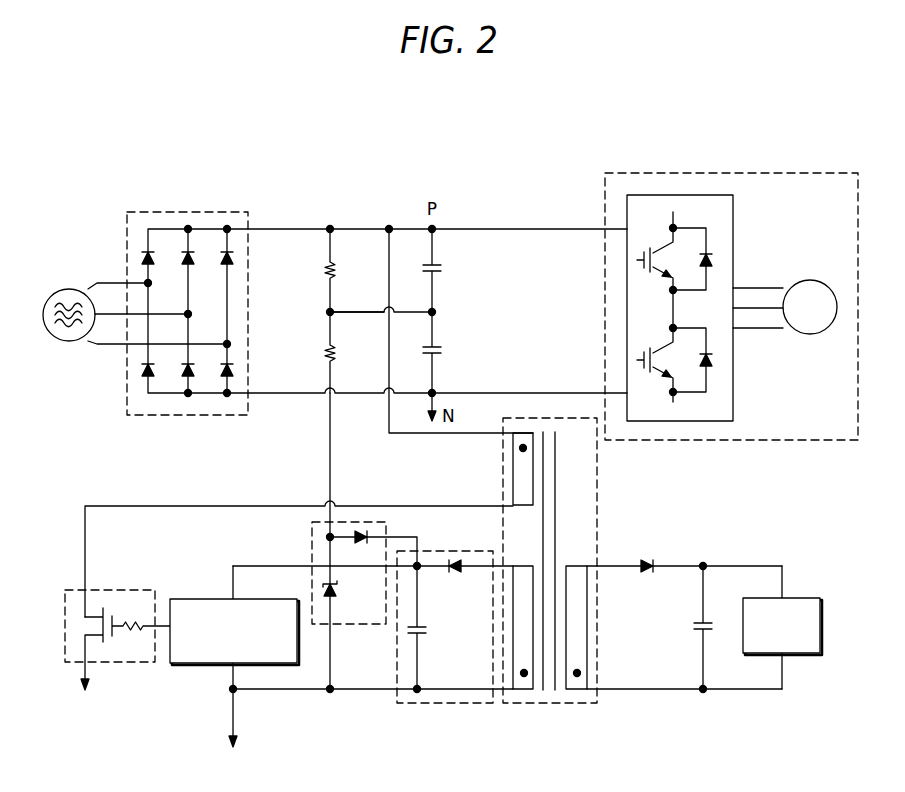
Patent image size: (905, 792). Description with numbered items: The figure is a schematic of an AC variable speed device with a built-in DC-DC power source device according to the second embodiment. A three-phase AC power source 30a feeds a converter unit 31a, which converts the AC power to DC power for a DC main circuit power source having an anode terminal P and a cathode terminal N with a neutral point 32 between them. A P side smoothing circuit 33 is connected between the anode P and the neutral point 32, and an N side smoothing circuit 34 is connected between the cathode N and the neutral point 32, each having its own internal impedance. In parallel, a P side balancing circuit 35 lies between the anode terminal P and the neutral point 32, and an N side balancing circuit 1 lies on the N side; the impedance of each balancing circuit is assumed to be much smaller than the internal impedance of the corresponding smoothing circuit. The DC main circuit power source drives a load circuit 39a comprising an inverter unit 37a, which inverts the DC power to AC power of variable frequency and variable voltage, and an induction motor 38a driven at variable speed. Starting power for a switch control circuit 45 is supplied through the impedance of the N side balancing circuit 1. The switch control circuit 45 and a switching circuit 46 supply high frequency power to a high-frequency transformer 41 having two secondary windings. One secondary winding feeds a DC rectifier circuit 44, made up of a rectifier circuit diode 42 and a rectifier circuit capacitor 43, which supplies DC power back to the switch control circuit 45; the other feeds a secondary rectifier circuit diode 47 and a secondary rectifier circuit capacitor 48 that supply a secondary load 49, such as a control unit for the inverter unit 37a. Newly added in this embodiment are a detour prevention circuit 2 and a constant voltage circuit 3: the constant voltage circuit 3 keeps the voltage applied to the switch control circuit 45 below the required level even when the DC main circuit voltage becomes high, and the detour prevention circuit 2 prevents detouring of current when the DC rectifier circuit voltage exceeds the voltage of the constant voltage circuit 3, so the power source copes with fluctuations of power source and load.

The three-phase AC power source 30a is at (58, 292).
The converter unit 31a is at (127, 223).
The P side balancing circuit 35 is at (325, 270).
The N side balancing circuit 1 is at (325, 353).
The neutral point 32 is at (327, 312).
The P side smoothing circuit 33 is at (445, 265).
The N side smoothing circuit 34 is at (445, 348).
The load circuit 39a is at (731, 268).
The inverter unit 37a is at (733, 238).
The induction motor 38a is at (813, 334).
The detour prevention circuit 2 is at (366, 530).
The constant voltage circuit 3 is at (340, 590).
The high-frequency transformer 41 is at (598, 506).
The rectifier circuit diode 42 is at (455, 578).
The rectifier circuit capacitor 43 is at (431, 631).
The DC rectifier circuit 44 is at (455, 666).
The switch control circuit 45 is at (180, 663).
The switching circuit 46 is at (65, 650).
The secondary rectifier circuit diode 47 is at (648, 573).
The secondary rectifier circuit capacitor 48 is at (693, 627).
The secondary load 49 is at (820, 622).